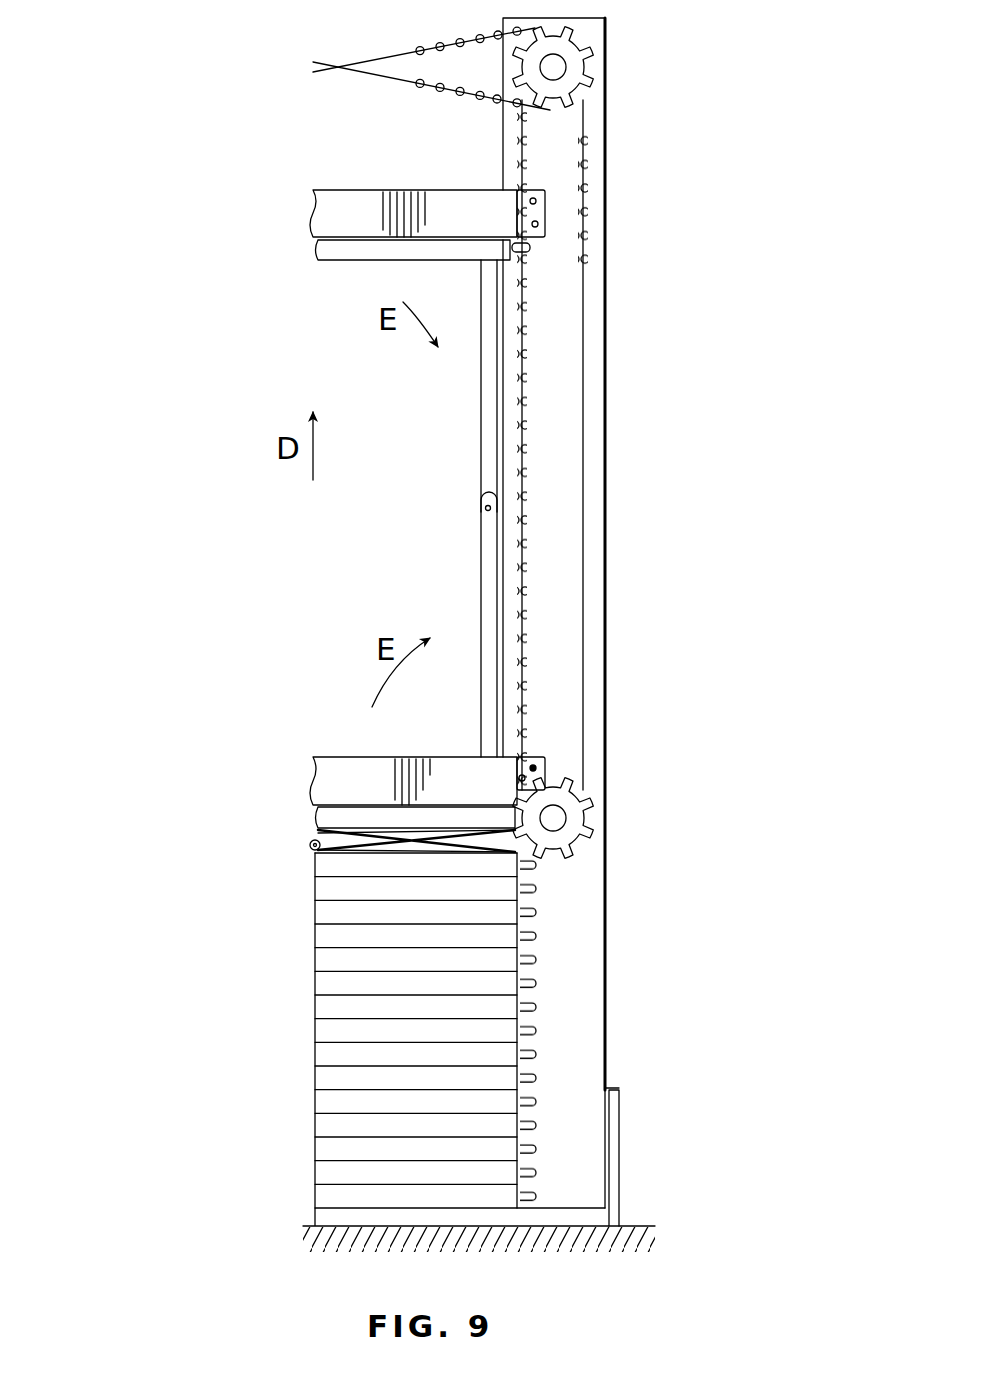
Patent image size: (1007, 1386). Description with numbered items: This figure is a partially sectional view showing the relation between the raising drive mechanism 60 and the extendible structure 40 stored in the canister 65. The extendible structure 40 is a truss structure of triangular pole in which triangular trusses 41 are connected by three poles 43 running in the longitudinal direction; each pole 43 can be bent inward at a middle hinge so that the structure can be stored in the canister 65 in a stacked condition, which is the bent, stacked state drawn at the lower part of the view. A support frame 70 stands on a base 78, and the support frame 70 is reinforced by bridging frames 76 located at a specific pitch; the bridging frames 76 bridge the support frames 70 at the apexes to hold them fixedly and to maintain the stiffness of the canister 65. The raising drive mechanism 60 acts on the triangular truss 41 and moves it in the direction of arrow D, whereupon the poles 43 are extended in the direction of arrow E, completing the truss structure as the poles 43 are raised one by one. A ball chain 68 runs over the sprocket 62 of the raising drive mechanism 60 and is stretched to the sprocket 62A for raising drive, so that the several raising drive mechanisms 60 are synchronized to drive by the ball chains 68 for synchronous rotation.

The extendible structure 40 is at (298, 881).
The triangular truss 41 is at (346, 248).
The pole 43 is at (481, 418).
The raising drive mechanism 60 is at (623, 568).
The sprocket 62 is at (595, 806).
The sprocket for raising drive 62A is at (575, 60).
The canister 65 is at (627, 862).
The ball chain 68 is at (420, 50).
The support frame 70 is at (607, 500).
The bridging frame 76 is at (400, 192).
The base 78 is at (602, 1217).